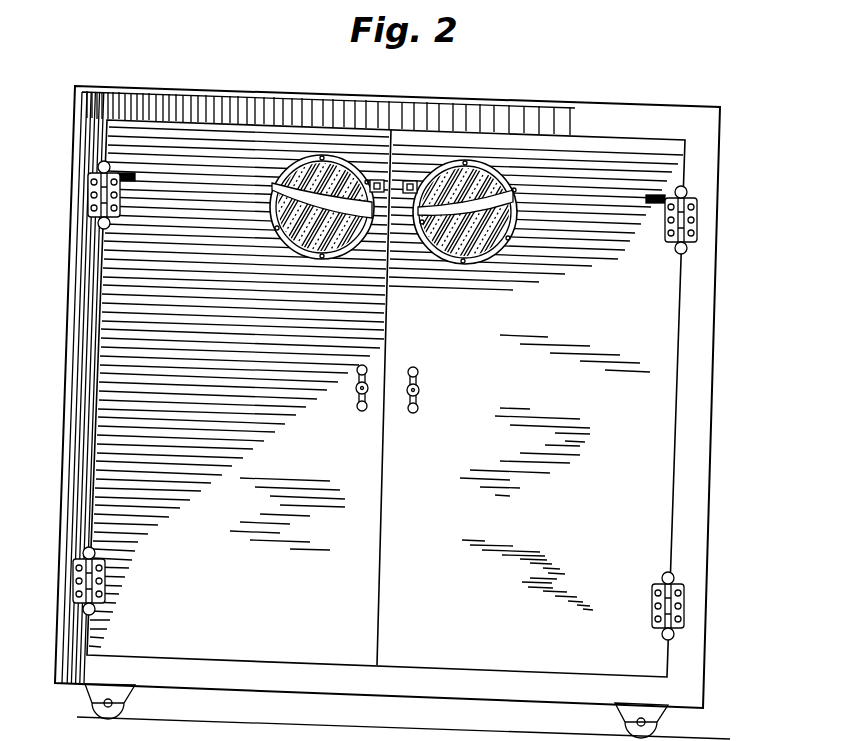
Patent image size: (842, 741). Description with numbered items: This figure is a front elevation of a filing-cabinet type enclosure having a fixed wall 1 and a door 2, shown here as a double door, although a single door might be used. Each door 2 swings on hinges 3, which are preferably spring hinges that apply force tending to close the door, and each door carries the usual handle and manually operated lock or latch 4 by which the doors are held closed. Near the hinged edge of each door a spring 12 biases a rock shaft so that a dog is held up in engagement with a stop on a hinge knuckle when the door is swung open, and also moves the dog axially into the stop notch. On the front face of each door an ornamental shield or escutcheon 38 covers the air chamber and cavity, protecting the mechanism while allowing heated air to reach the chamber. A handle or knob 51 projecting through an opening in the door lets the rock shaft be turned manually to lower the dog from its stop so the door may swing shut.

The fixed wall 1 is at (700, 354).
The door 2 is at (386, 398).
The hinges 3 is at (92, 184).
The handle and lock or latch 4 is at (356, 378).
The spring 12 is at (128, 175).
The shield or escutcheon 38 is at (518, 213).
The handle or knob 51 is at (410, 181).